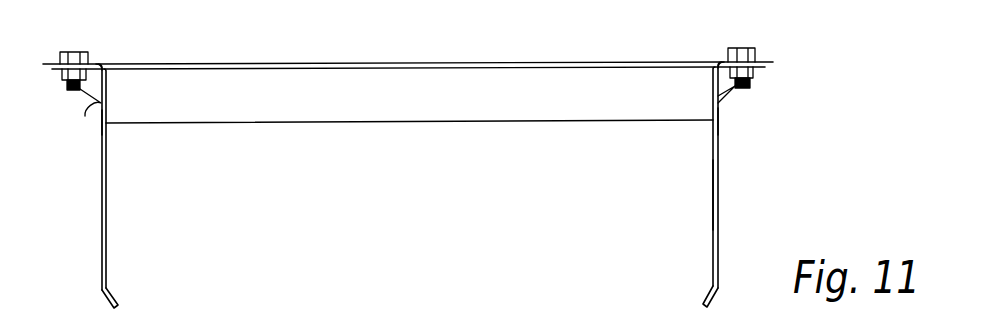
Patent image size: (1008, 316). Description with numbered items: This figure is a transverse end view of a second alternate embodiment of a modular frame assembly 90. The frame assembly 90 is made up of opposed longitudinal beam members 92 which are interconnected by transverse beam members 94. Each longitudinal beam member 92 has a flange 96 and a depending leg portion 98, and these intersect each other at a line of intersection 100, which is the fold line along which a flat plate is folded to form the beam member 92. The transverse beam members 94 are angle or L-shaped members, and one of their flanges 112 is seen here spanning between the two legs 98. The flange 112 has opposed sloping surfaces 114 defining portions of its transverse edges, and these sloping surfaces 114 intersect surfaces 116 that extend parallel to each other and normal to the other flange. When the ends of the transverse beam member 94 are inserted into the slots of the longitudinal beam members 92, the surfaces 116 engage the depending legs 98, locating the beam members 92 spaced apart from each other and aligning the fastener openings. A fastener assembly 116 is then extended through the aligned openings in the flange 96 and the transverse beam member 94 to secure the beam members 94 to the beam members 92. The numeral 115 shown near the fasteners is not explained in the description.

The modular frame assembly 90 is at (374, 46).
The longitudinal beam member 92 is at (107, 210).
The transverse beam member 94 is at (280, 63).
The flange 96 is at (52, 62).
The depending leg portion 98 is at (712, 187).
The line of intersection 100 is at (104, 62).
The flange 112 is at (216, 124).
The sloping surface 114 is at (107, 110).
The nut 115 is at (64, 80).
The fastener assembly 116 is at (99, 124).